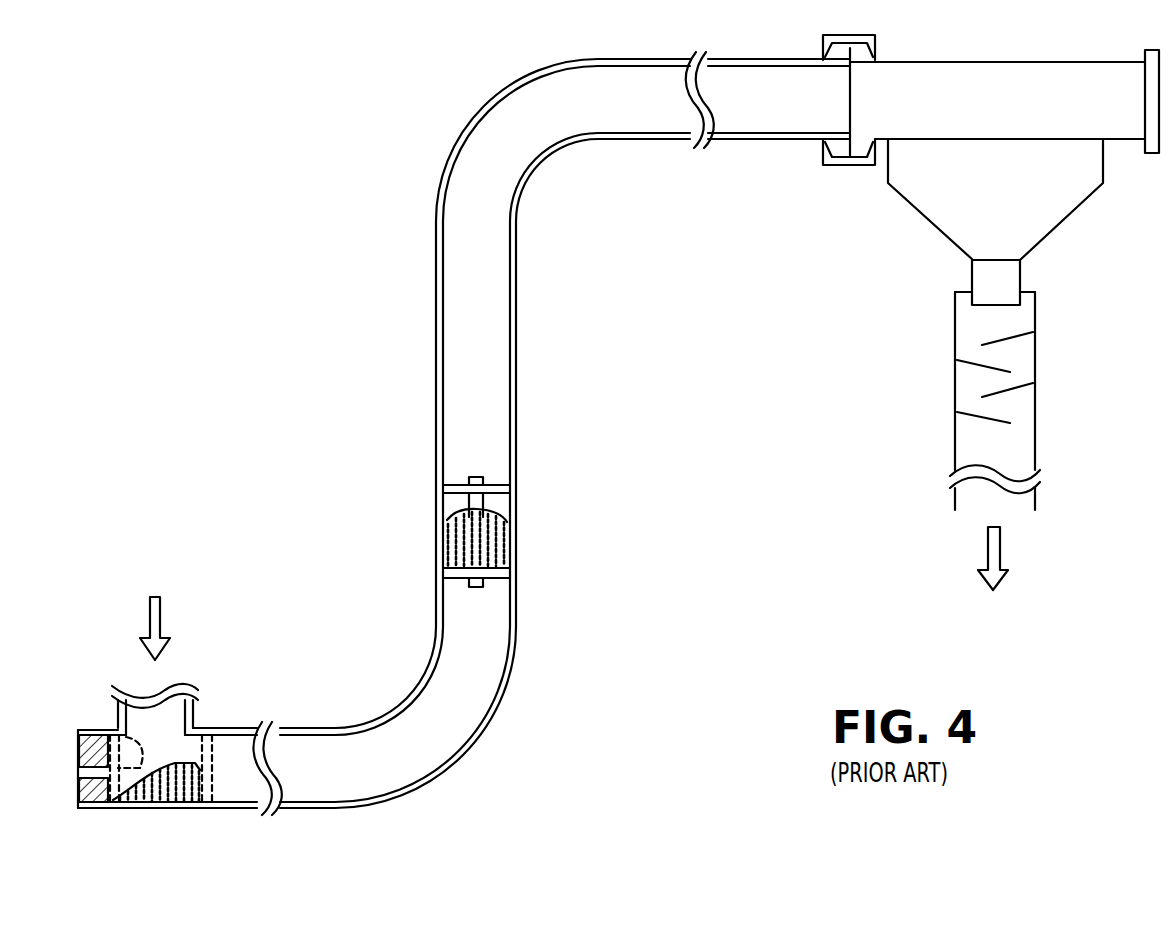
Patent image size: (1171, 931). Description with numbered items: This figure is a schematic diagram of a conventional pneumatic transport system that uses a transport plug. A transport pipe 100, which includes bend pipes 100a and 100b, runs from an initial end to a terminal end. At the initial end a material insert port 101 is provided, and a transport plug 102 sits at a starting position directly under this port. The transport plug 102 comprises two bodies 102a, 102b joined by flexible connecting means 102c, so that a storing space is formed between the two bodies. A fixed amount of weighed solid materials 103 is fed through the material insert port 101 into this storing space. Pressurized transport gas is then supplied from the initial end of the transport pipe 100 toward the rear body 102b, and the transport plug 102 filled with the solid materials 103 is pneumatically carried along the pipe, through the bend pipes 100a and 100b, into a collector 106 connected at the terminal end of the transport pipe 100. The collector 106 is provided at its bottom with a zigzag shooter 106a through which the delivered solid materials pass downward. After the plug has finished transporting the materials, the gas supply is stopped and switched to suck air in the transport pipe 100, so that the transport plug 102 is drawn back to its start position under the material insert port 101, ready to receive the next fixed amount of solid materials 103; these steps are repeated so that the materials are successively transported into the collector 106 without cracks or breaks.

The transport pipe 100 is at (498, 355).
The bend pipe 100a is at (410, 747).
The bend pipe 100b is at (480, 131).
The material insert port 101 is at (172, 720).
The transport plug 102 is at (118, 726).
The body 102a is at (210, 807).
The rear body 102b is at (106, 810).
The flexible connecting means 102c is at (123, 802).
The solid materials 103 is at (497, 520).
The collector 106 is at (1067, 203).
The zigzag shooter 106a is at (1035, 337).